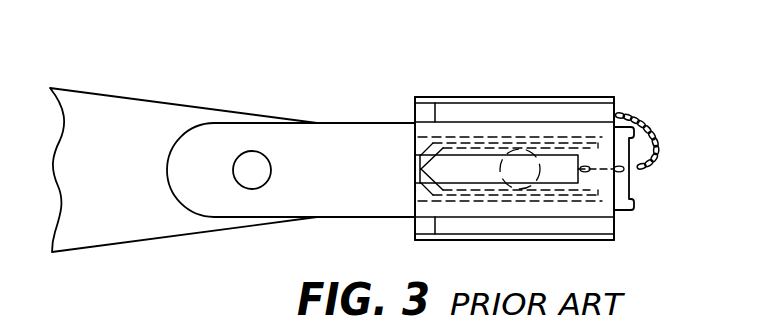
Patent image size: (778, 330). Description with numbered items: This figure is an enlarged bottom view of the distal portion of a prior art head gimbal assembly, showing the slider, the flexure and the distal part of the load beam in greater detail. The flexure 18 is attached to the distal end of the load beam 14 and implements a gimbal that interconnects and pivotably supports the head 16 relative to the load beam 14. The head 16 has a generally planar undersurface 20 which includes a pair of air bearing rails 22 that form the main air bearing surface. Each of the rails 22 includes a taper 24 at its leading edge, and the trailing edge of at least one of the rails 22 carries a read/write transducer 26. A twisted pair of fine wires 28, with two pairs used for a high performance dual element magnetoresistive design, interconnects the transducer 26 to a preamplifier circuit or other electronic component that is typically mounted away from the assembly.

The load beam 14 is at (172, 220).
The head 16 is at (509, 92).
The flexure 18 is at (348, 128).
The planar undersurface 20 is at (414, 125).
The air bearing rails 22 is at (556, 108).
The taper 24 is at (422, 100).
The read/write transducer 26 is at (615, 100).
The twisted pair of fine wires 28 is at (638, 114).